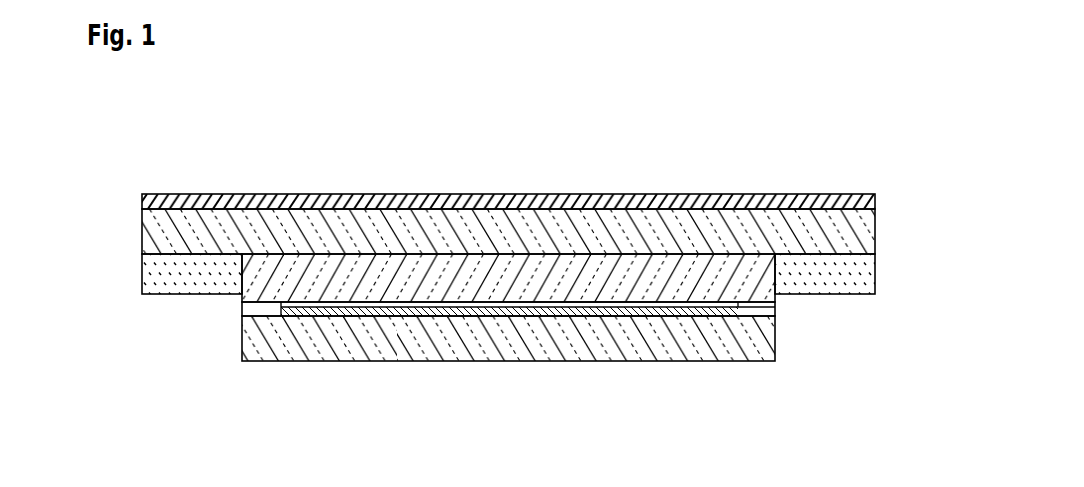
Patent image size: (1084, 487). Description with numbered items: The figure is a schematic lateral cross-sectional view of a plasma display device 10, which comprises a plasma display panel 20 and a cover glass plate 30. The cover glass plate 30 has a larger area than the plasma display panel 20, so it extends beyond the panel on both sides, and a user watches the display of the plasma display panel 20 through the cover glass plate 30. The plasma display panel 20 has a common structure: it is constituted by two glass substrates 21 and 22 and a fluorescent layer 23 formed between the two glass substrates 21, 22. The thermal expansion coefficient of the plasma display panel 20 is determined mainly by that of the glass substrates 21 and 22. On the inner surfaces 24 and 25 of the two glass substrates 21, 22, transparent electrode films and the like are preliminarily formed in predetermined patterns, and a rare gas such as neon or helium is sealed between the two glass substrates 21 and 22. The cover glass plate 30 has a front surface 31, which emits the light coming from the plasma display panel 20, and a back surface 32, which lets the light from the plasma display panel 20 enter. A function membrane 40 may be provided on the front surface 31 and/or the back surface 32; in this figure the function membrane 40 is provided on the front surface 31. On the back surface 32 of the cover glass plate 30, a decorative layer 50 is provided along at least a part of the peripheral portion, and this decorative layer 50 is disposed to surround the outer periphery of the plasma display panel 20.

The plasma display device 10 is at (148, 124).
The plasma display panel 20 is at (552, 349).
The glass substrate 21 is at (778, 290).
The glass substrate 22 is at (829, 303).
The fluorescent layer 23 is at (740, 316).
The inner surface 24 is at (398, 303).
The inner surface 25 is at (552, 357).
The cover glass plate 30 is at (508, 254).
The front surface 31 is at (158, 210).
The back surface 32 is at (158, 252).
The function membrane 40 is at (868, 205).
The decorative layer 50 is at (870, 275).